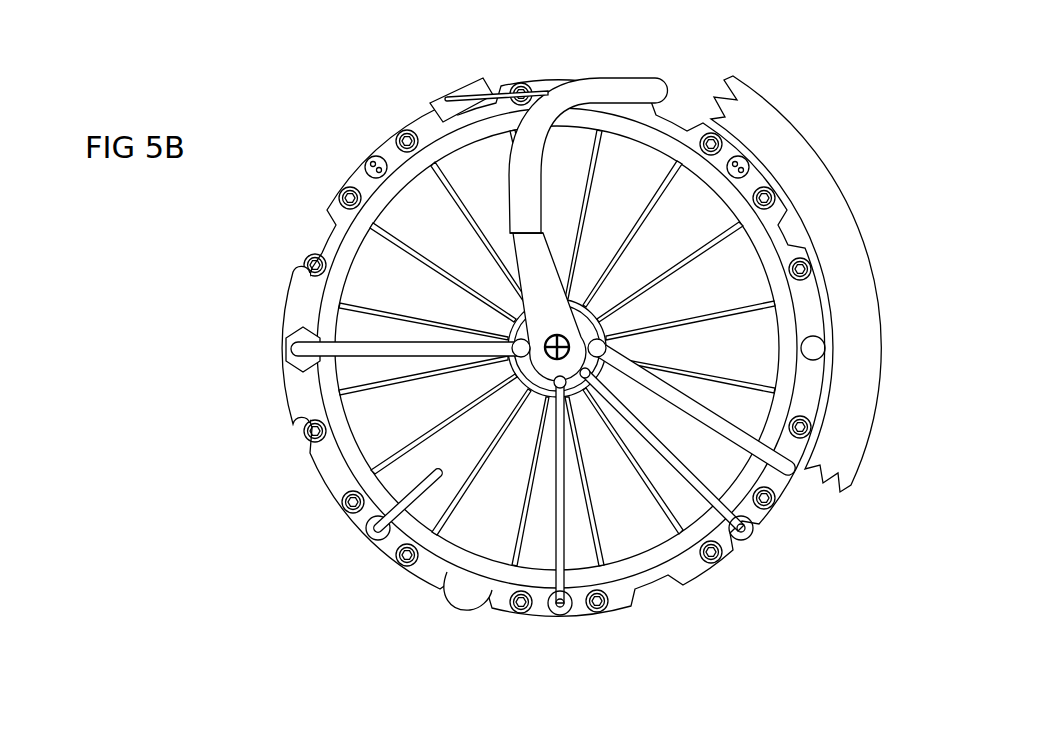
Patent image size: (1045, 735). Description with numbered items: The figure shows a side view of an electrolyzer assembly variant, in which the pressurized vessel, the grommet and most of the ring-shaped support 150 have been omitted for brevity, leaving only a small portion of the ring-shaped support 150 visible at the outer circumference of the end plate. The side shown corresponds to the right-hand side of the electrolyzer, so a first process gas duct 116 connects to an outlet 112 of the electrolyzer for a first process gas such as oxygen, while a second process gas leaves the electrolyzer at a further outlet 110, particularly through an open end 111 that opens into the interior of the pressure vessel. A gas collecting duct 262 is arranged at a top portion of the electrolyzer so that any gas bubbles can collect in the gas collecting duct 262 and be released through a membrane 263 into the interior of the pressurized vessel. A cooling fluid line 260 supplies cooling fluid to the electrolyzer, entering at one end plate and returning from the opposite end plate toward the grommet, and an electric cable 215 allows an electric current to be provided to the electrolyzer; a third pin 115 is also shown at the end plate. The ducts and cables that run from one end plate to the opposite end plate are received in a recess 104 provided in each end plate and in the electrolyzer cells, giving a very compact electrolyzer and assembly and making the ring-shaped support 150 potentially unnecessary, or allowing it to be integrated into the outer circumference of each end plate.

The recess 104 is at (322, 238).
The ring-shaped support 150 is at (786, 138).
The electric cable 215 is at (612, 92).
The gas collecting duct 262 is at (500, 92).
The membrane 263 is at (432, 104).
The cooling fluid line 260 is at (300, 365).
The outlet 110 is at (366, 535).
The open end 111 is at (397, 538).
The outlet 112 is at (752, 536).
The first process gas duct 116 is at (733, 545).
The third pin 115 is at (570, 596).